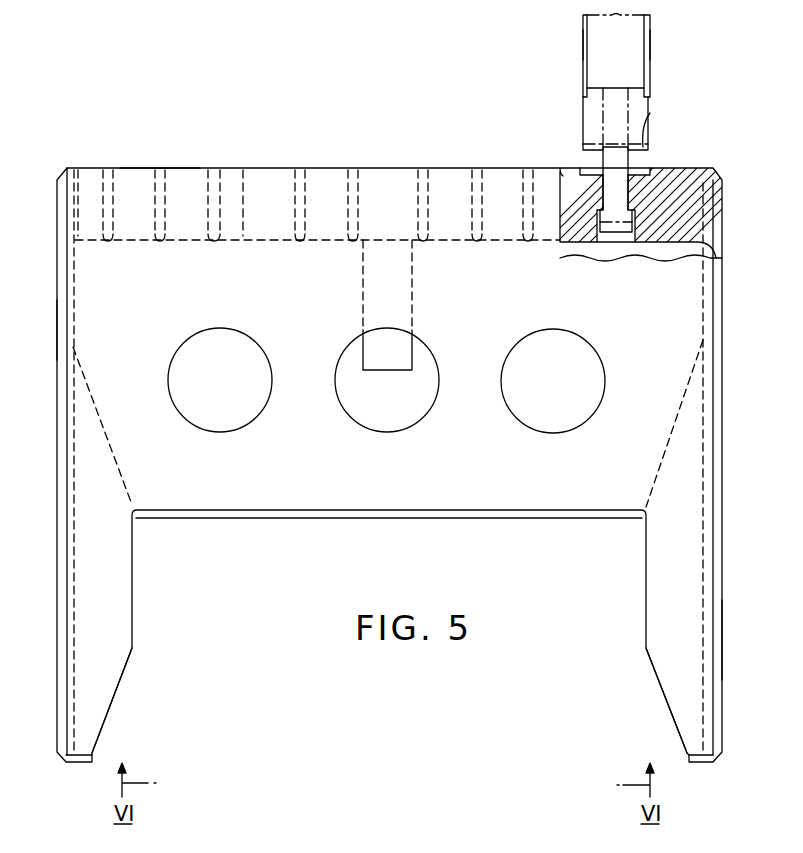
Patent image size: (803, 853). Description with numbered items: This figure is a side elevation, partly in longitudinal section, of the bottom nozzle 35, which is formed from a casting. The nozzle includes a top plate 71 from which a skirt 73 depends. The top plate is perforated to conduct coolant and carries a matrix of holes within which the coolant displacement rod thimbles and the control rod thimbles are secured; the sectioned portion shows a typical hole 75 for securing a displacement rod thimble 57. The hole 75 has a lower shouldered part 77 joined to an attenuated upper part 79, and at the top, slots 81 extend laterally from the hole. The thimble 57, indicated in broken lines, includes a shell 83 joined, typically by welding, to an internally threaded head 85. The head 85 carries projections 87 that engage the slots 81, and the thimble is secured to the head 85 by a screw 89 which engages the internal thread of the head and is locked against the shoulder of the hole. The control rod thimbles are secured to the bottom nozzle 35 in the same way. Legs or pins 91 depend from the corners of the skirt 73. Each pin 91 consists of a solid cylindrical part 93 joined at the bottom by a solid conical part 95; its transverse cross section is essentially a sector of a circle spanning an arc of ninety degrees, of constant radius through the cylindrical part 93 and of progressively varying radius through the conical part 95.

The bottom nozzle 35 is at (770, 327).
The coolant displacement rod thimble 57 is at (583, 43).
The top plate 71 is at (152, 166).
The skirt 73 is at (100, 313).
The hole 75 is at (612, 193).
The lower shouldered part 77 is at (562, 247).
The attenuated upper part 79 is at (630, 200).
The slot 81 is at (590, 172).
The shell 83 is at (652, 32).
The internally threaded head 85 is at (648, 107).
The projection 87 is at (650, 113).
The screw 89 is at (567, 182).
The leg or pin 91 is at (722, 638).
The solid cylindrical part 93 is at (112, 612).
The solid conical part 95 is at (673, 702).